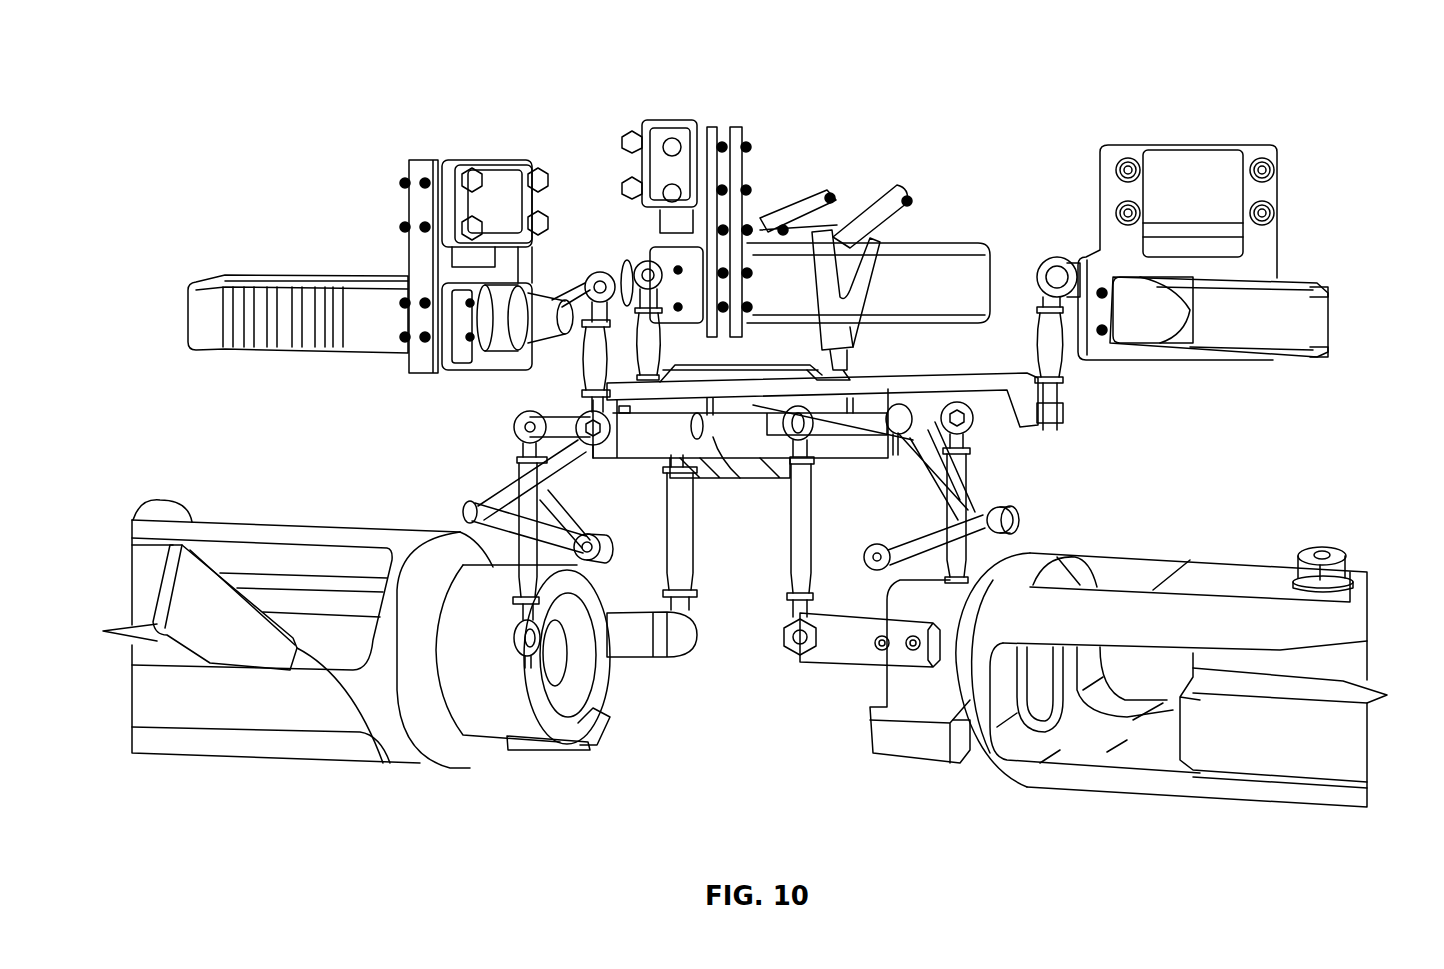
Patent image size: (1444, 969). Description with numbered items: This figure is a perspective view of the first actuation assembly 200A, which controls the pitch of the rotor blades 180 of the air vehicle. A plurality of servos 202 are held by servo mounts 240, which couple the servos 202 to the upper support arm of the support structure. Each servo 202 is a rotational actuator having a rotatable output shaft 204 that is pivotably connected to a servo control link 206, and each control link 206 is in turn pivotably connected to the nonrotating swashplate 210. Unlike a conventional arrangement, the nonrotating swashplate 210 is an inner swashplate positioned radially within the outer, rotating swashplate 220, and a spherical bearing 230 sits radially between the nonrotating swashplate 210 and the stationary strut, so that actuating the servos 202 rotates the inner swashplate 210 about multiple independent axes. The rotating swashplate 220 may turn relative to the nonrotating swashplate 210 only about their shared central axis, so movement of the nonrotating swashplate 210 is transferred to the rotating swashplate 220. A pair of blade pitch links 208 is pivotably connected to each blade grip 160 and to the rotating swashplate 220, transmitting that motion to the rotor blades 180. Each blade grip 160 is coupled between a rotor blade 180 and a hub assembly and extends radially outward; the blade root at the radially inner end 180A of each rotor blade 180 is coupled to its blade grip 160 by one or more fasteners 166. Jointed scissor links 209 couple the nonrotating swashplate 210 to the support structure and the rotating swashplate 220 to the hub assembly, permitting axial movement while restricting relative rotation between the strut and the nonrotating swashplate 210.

The first actuation assembly 200A is at (207, 66).
The blade grip 160 is at (410, 748).
The fastener 166 is at (160, 508).
The rotor blade 180 is at (155, 597).
The radially inner end 180A is at (385, 760).
The servo 202 is at (253, 272).
The output shaft 204 is at (560, 293).
The servo control link 206 is at (647, 338).
The blade pitch link 208 is at (532, 500).
The jointed scissor link 209 is at (468, 507).
The nonrotating swashplate 210 is at (970, 455).
The rotating swashplate 220 is at (740, 478).
The spherical bearing 230 is at (753, 373).
The servo mount 240 is at (410, 173).